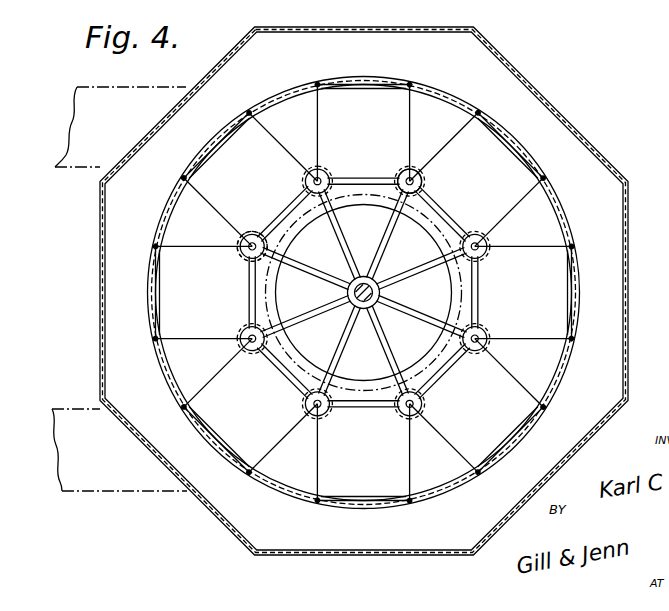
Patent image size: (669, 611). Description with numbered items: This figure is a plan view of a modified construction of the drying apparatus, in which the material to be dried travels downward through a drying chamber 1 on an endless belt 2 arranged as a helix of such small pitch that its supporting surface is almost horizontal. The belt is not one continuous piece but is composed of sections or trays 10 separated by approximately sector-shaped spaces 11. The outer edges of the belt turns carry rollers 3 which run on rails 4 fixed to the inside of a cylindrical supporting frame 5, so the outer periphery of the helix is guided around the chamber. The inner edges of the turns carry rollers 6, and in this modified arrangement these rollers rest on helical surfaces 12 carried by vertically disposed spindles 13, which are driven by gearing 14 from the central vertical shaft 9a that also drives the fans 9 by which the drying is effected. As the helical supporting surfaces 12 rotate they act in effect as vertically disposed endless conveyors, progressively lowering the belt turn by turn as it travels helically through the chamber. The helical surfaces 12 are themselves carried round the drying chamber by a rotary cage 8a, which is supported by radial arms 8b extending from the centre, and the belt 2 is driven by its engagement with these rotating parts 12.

The drying chamber 1 is at (99, 258).
The endless belt 2 is at (147, 100).
The rollers 3 is at (175, 400).
The rails 4 is at (157, 288).
The cylindrical supporting frame 5 is at (230, 118).
The rollers 6 is at (423, 182).
The rotary cage 8a is at (352, 183).
The radial arms 8b is at (386, 266).
The fans 9 is at (417, 348).
The central vertical shaft 9a is at (373, 306).
The sections or trays 10 is at (322, 127).
The spaces 11 is at (190, 223).
The helical surfaces 12 is at (256, 240).
The spindles 13 is at (304, 184).
The gearing 14 is at (367, 196).